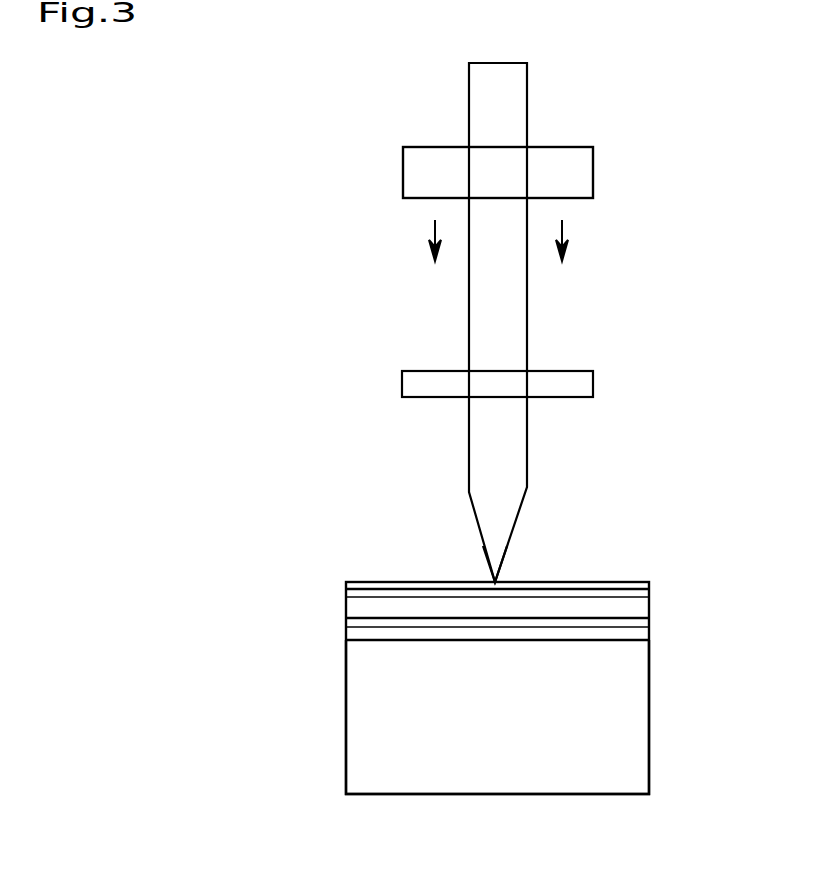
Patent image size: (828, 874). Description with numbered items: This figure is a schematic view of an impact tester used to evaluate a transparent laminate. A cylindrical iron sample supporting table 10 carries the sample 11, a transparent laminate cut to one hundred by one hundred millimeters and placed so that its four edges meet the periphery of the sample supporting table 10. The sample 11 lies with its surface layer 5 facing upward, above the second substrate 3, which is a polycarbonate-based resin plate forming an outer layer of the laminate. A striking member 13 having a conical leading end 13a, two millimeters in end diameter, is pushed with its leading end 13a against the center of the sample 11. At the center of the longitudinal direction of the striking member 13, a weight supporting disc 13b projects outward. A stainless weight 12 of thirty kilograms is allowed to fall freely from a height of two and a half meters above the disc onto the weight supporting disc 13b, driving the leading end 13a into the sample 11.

The second substrate 3 is at (633, 633).
The surface layer 5 is at (633, 583).
The sample supporting table 10 is at (632, 738).
The sample 11 is at (372, 571).
The stainless weight 12 is at (567, 163).
The striking member 13 is at (508, 459).
The leading end 13a is at (497, 562).
The weight supporting disc 13b is at (562, 383).